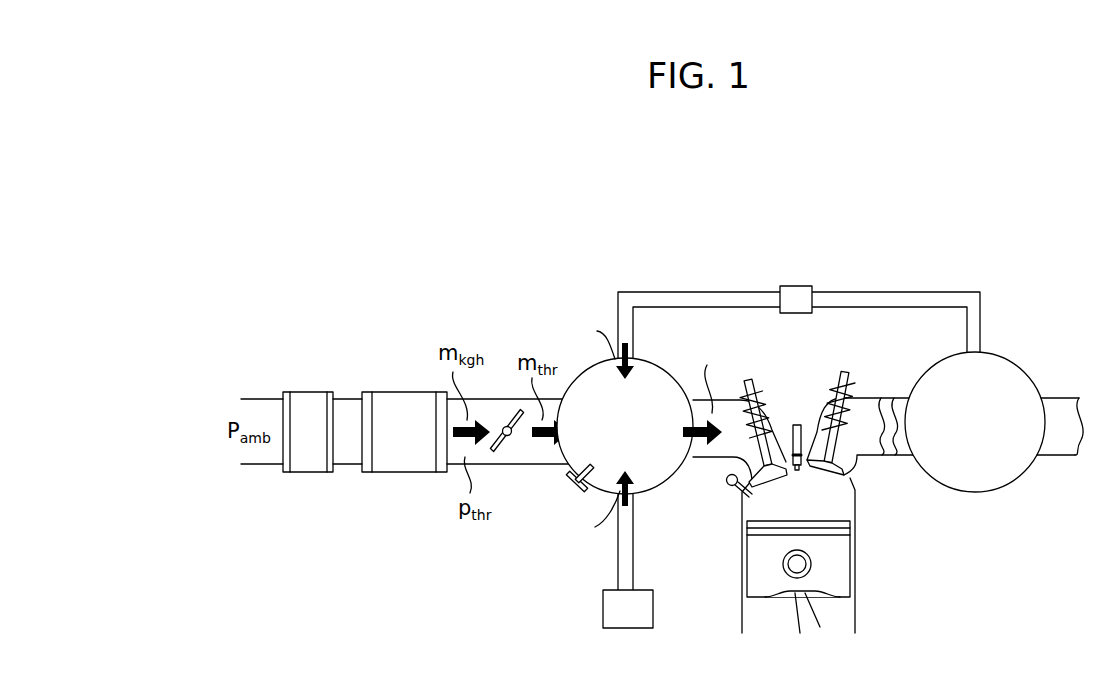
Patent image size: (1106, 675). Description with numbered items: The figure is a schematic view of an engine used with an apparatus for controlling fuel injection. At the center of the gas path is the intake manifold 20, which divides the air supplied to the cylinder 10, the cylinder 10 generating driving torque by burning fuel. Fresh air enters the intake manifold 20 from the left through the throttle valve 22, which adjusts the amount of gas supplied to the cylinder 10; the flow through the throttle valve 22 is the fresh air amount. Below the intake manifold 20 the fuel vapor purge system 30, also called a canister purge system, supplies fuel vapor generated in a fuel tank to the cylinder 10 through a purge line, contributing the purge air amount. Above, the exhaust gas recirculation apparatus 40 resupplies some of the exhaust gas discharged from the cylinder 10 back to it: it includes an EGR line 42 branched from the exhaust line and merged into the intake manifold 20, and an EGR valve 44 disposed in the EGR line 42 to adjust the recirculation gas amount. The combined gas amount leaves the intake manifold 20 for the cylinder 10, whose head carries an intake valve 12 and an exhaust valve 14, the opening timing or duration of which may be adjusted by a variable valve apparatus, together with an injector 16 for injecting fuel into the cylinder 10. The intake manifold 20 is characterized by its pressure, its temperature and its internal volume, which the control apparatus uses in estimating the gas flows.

The cylinder 10 is at (721, 611).
The intake valve 12 is at (784, 423).
The exhaust valve 14 is at (853, 400).
The injector 16 is at (740, 490).
The intake manifold 20 is at (673, 478).
The throttle valve 22 is at (501, 398).
The fuel vapor purge system 30 is at (603, 607).
The exhaust gas recirculation apparatus 40 is at (799, 279).
The EGR line 42 is at (872, 291).
The EGR valve 44 is at (797, 276).